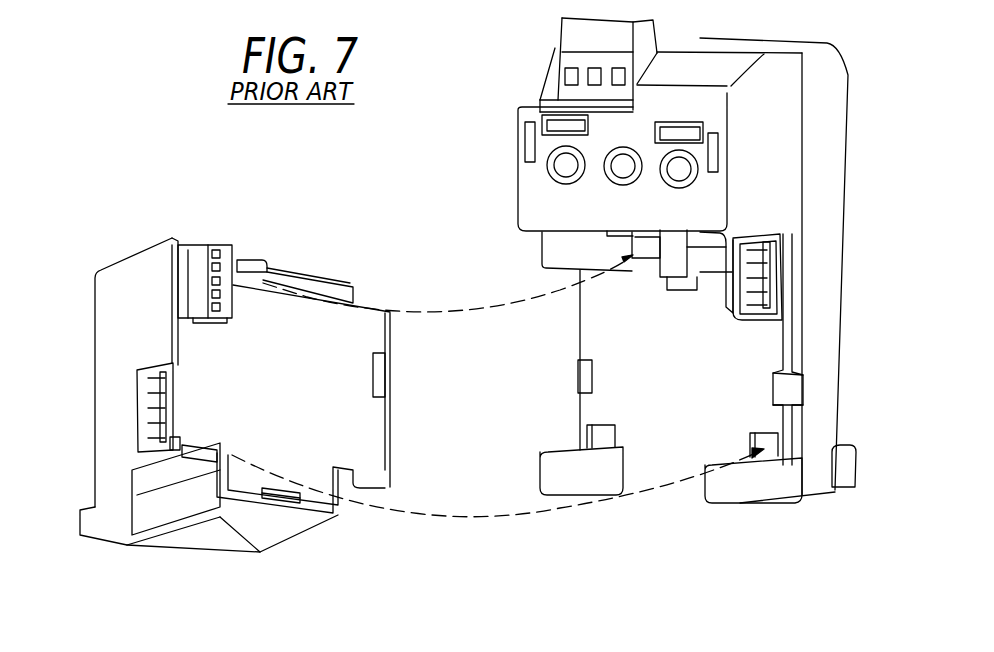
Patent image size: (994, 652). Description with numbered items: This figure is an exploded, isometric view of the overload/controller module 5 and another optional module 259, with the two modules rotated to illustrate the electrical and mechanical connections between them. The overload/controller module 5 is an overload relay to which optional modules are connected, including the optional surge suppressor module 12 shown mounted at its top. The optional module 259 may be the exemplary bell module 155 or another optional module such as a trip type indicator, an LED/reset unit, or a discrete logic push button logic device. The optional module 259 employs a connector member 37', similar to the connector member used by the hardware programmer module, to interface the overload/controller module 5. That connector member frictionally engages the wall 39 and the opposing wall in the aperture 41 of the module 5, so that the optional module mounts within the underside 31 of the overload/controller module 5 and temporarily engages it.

The overload/controller module 5 is at (836, 101).
The surge suppressor module 12 is at (570, 29).
The underside 31 is at (684, 386).
The wall 39 is at (772, 283).
The aperture 41 is at (750, 318).
The bell module 155 is at (102, 372).
The connector member 37' is at (195, 258).
The optional module 259 is at (280, 254).